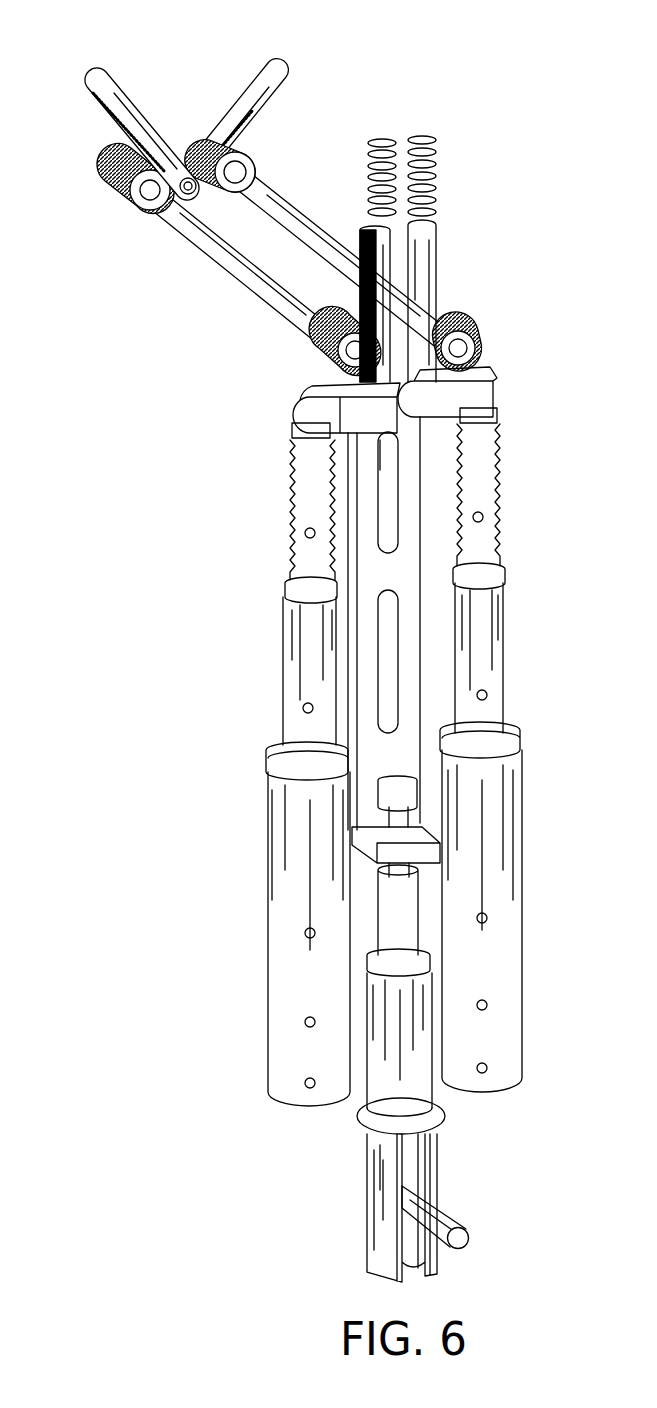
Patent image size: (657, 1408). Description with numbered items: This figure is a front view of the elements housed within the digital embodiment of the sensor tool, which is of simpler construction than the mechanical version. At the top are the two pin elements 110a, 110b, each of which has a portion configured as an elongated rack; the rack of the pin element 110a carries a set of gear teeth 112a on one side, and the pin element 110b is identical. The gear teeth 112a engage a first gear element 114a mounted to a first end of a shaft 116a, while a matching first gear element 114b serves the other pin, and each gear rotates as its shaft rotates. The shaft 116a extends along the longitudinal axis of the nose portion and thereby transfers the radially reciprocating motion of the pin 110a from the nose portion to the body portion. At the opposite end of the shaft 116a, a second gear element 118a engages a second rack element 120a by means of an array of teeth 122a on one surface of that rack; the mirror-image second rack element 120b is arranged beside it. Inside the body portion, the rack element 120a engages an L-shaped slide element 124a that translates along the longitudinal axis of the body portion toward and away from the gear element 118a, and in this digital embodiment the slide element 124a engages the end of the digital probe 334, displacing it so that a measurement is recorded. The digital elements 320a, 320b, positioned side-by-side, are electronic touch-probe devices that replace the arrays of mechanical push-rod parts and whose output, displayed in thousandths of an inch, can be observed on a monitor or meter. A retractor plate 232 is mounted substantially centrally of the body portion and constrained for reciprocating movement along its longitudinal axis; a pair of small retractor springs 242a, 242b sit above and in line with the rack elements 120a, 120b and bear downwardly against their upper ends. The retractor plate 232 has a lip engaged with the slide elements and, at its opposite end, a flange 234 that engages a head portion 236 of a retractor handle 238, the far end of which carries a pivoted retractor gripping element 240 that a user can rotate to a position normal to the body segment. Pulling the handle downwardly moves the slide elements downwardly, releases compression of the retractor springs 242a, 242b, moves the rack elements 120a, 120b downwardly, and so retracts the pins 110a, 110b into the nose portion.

The pin element 110a is at (106, 78).
The pin element 110b is at (270, 62).
The set of gear teeth 112a is at (113, 115).
The first gear element 114a is at (112, 184).
The first gear element 114b is at (248, 143).
The shaft 116a is at (238, 272).
The second gear element 118a is at (317, 353).
The second rack element 120a is at (380, 250).
The second rack element 120b is at (433, 298).
The array of teeth 122a is at (360, 260).
The L-shaped slide element 124a is at (293, 410).
The retractor plate 232 is at (457, 567).
The flange 234 is at (423, 852).
The head portion 236 is at (405, 800).
The retractor handle 238 is at (420, 1048).
The retractor gripping element 240 is at (445, 1215).
The retractor spring 242a is at (385, 140).
The retractor spring 242b is at (437, 148).
The digital element 320a is at (294, 832).
The digital element 320b is at (494, 964).
The digital probe 334 is at (300, 572).